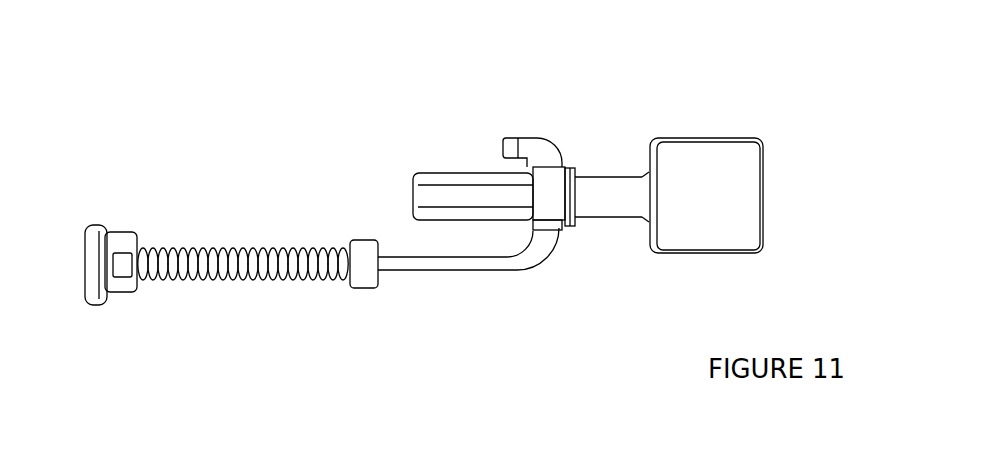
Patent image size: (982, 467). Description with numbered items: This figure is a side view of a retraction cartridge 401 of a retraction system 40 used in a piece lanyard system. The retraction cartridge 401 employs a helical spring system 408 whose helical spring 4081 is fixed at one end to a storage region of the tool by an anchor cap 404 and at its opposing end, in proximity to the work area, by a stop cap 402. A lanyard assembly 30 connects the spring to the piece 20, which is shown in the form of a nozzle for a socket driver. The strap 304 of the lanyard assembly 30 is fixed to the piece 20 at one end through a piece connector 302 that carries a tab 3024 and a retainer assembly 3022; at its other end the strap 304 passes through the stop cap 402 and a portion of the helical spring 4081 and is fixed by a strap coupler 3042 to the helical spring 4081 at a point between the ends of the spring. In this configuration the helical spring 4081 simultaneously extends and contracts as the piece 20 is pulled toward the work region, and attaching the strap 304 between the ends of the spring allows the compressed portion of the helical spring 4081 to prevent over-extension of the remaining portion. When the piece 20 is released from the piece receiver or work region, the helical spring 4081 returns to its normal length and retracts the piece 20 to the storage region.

The piece 20 is at (717, 210).
The lanyard assembly 30 is at (417, 280).
The piece connector 302 is at (555, 202).
The retainer assembly 3022 is at (575, 168).
The tab 3024 is at (540, 152).
The strap 304 is at (512, 270).
The strap coupler 3042 is at (251, 262).
The retraction system 40 is at (293, 340).
The retraction cartridge 401 is at (187, 198).
The stop cap 402 is at (367, 258).
The anchor cap 404 is at (112, 247).
The helical spring system 408 is at (317, 187).
The helical spring 4081 is at (200, 277).